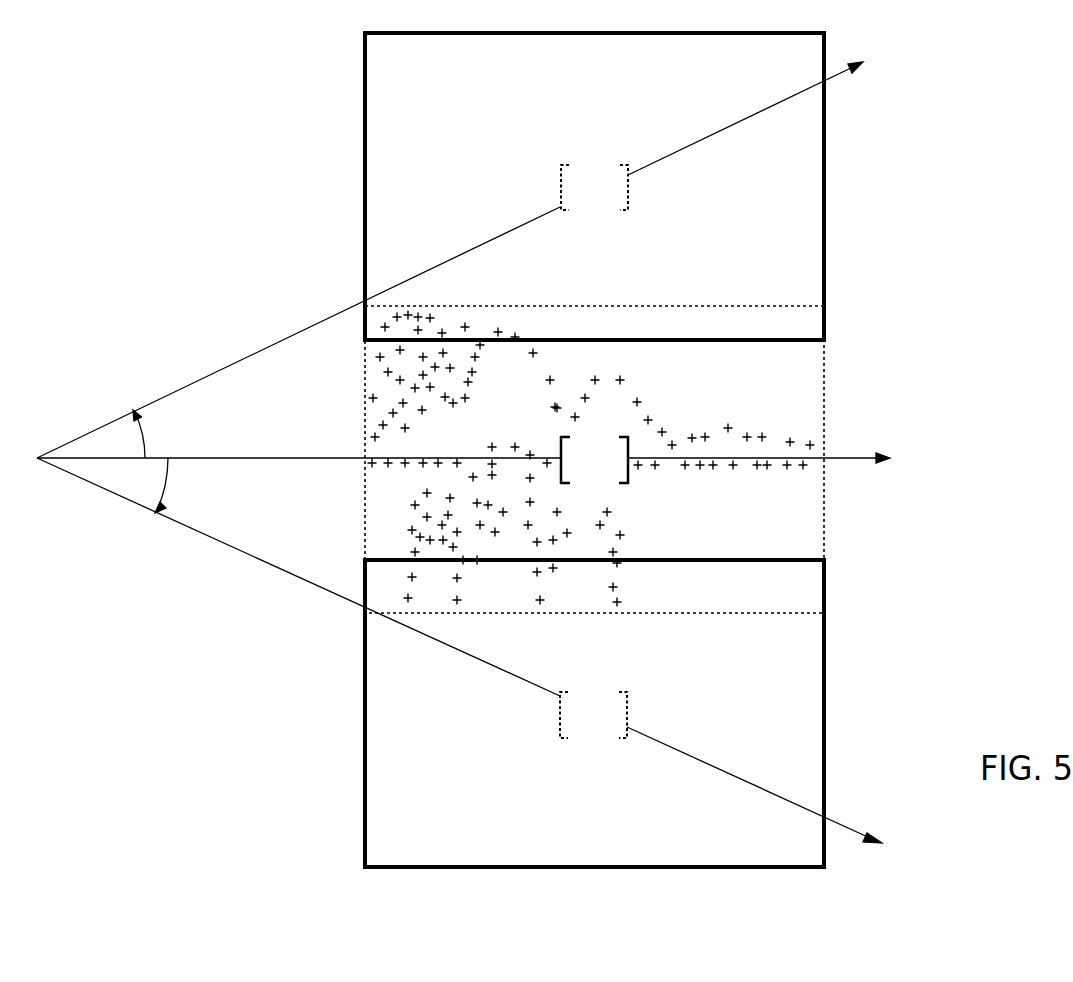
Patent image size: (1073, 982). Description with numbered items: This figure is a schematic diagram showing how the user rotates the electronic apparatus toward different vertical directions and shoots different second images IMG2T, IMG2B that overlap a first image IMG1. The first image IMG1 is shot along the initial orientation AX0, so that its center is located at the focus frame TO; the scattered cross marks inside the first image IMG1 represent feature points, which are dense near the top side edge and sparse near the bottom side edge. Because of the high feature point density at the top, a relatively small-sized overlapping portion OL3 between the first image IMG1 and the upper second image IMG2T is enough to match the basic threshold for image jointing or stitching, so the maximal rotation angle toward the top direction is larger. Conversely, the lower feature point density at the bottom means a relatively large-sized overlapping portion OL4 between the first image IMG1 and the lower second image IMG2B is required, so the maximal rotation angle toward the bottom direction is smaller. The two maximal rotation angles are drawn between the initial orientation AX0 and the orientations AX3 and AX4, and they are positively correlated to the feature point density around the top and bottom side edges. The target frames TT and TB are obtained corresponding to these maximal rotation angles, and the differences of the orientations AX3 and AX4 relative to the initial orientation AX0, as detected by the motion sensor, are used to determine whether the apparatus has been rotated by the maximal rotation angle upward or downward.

The second image IMG2T is at (365, 117).
The second image IMG2B is at (365, 690).
The first image IMG1 is at (825, 398).
The overlapping portion OL3 is at (824, 306).
The overlapping portion OL4 is at (824, 560).
The initial orientation AX0 is at (494, 459).
The orientation AX3 is at (482, 252).
The orientation AX4 is at (494, 664).
The target frame TT is at (611, 203).
The focus frame TO is at (613, 473).
The target frame TB is at (612, 734).